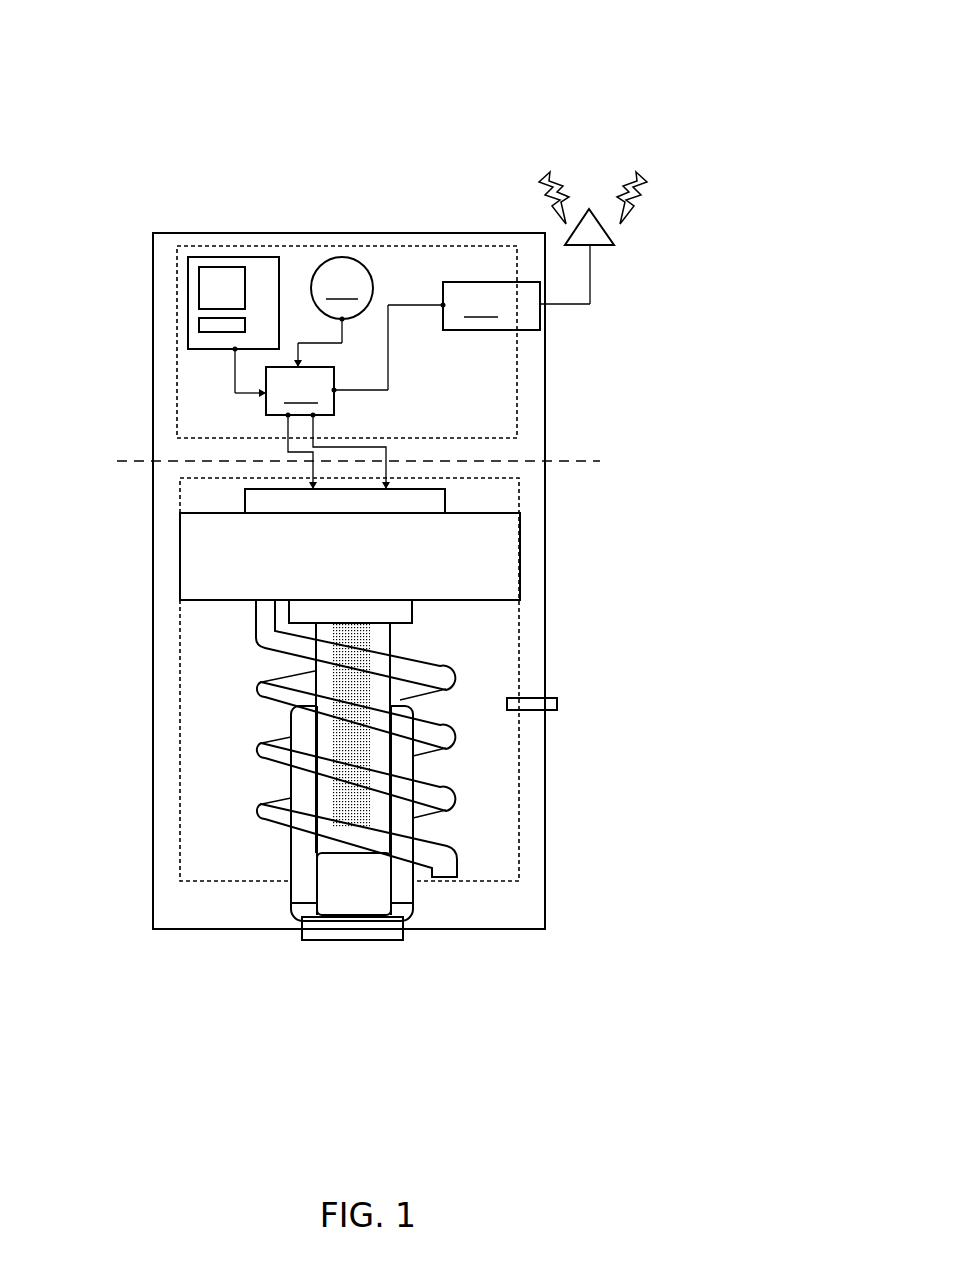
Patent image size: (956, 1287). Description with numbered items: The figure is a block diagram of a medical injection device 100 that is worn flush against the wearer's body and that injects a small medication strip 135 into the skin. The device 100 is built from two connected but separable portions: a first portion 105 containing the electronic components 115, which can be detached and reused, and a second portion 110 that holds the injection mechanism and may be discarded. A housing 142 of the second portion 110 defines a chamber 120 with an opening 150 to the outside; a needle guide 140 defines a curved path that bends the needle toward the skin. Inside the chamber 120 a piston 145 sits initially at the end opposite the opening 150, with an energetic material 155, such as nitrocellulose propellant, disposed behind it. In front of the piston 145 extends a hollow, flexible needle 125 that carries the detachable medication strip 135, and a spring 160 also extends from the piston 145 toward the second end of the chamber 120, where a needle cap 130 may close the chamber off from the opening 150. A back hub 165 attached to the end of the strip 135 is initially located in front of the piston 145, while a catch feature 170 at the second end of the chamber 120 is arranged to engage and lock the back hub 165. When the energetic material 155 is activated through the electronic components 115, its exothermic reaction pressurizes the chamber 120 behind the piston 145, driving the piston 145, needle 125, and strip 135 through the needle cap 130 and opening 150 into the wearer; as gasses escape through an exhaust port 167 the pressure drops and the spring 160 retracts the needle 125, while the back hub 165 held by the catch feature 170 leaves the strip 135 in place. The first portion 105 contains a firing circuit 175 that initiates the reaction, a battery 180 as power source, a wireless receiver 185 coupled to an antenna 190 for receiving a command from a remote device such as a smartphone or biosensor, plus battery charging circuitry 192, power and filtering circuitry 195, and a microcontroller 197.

The medical injection device 100 is at (133, 86).
The first portion 105 is at (153, 402).
The second portion 110 is at (155, 602).
The electronic components 115 is at (177, 268).
The chamber 120 is at (522, 663).
The needle 125 is at (392, 632).
The needle cap 130 is at (378, 897).
The medication strip 135 is at (290, 727).
The needle guide 140 is at (397, 760).
The housing 142 is at (533, 527).
The piston 145 is at (207, 552).
The opening 150 is at (397, 930).
The energetic material 155 is at (433, 496).
The spring 160 is at (445, 803).
The back hub 165 is at (375, 610).
The exhaust port 167 is at (557, 703).
The catch feature 170 is at (400, 908).
The firing circuit 175 is at (356, 396).
The battery 180 is at (333, 312).
The wireless receiver 185 is at (516, 287).
The antenna 190 is at (593, 235).
The battery charging circuitry 192 is at (227, 278).
The power and filtering circuitry 195 is at (207, 334).
The microcontroller 197 is at (265, 277).